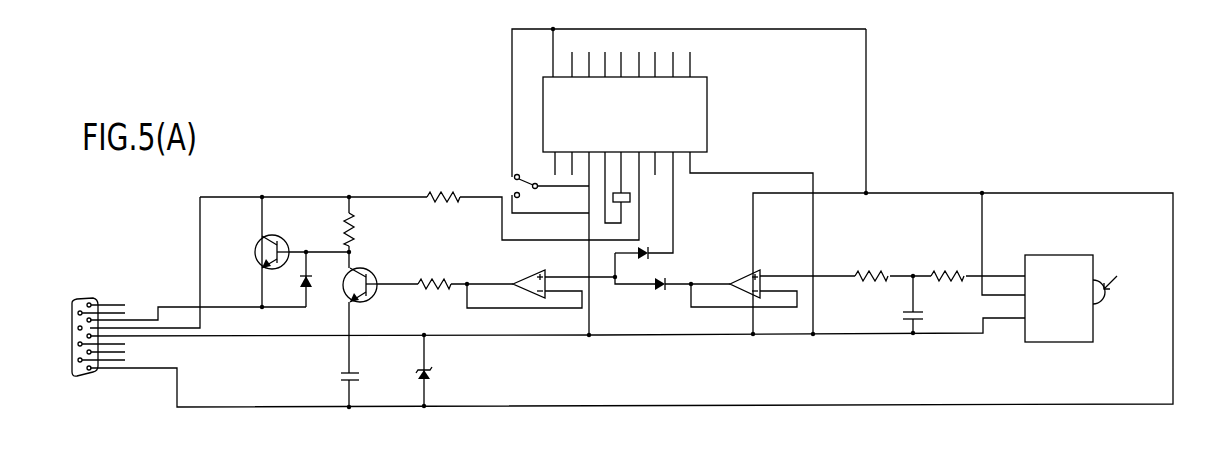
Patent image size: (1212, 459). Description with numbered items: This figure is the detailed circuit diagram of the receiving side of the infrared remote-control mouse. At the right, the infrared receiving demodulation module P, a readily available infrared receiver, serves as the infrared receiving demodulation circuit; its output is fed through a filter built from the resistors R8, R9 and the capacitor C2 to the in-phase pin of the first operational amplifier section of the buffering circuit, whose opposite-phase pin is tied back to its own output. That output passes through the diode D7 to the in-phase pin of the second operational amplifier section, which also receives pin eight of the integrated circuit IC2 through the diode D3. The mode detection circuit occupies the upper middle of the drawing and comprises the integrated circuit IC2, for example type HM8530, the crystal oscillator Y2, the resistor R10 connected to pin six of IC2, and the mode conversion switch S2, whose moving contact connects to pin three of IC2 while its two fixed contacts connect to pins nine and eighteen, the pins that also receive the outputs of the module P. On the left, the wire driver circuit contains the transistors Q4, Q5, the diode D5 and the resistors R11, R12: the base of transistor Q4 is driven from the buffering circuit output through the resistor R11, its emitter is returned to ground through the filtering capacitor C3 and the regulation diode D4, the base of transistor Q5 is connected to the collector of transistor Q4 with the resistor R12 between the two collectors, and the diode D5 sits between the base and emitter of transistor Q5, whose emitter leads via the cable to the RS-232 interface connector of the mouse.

The RS-232 interface RS-232 is at (99, 325).
The transistor Q5 is at (280, 244).
The transistor Q4 is at (368, 278).
The resistor R12 is at (365, 229).
The resistor R11 is at (435, 276).
The resistor R10 is at (443, 187).
The resistor R9 is at (871, 267).
The resistor R8 is at (947, 267).
The diode D5 is at (316, 279).
The regulation diode D4 is at (436, 373).
The diode D3 is at (635, 261).
The diode D7 is at (660, 295).
The filtering capacitor C3 is at (339, 376).
The capacitor C2 is at (924, 316).
The mode conversion switch S2 is at (512, 186).
The crystal oscillator Y2 is at (604, 203).
The integrated circuit IC2 is at (625, 113).
The infrared receiving demodulation module P is at (1071, 288).